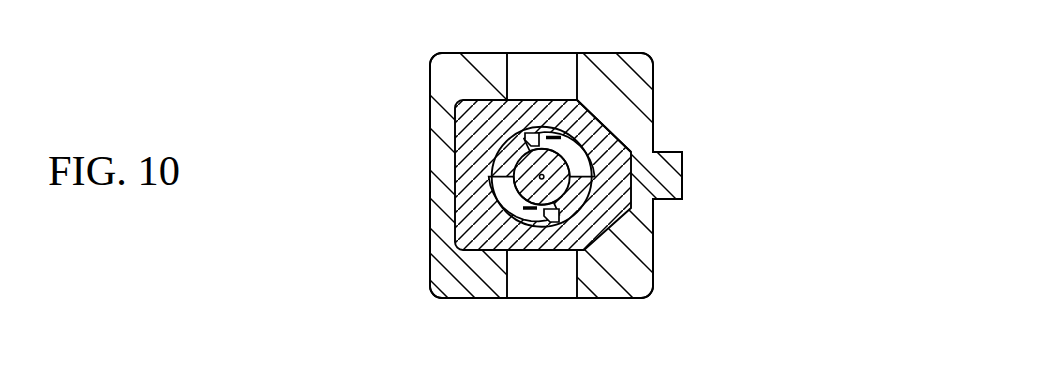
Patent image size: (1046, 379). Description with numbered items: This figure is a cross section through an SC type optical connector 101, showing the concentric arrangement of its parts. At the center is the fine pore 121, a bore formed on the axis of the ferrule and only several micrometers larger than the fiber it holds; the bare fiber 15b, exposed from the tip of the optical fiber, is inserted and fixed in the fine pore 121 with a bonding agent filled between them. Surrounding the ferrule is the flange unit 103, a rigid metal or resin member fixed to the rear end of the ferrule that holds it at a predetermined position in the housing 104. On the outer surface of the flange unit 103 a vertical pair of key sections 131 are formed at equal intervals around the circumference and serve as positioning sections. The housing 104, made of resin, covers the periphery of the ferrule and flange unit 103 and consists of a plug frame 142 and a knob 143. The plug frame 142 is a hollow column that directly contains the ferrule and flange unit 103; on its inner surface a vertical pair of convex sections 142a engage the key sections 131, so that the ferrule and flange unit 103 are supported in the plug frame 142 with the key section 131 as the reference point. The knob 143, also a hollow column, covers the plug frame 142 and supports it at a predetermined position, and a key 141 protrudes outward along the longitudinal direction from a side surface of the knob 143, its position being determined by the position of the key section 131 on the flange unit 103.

The optical connector 101 is at (395, 52).
The flange unit 103 is at (585, 194).
The housing 104 is at (660, 274).
The fine pore 121 is at (540, 175).
The key section 131 is at (552, 136).
The key 141 is at (673, 173).
The plug frame 142 is at (473, 260).
The convex section 142a is at (536, 133).
The knob 143 is at (633, 93).
The bare fiber 15b is at (495, 183).